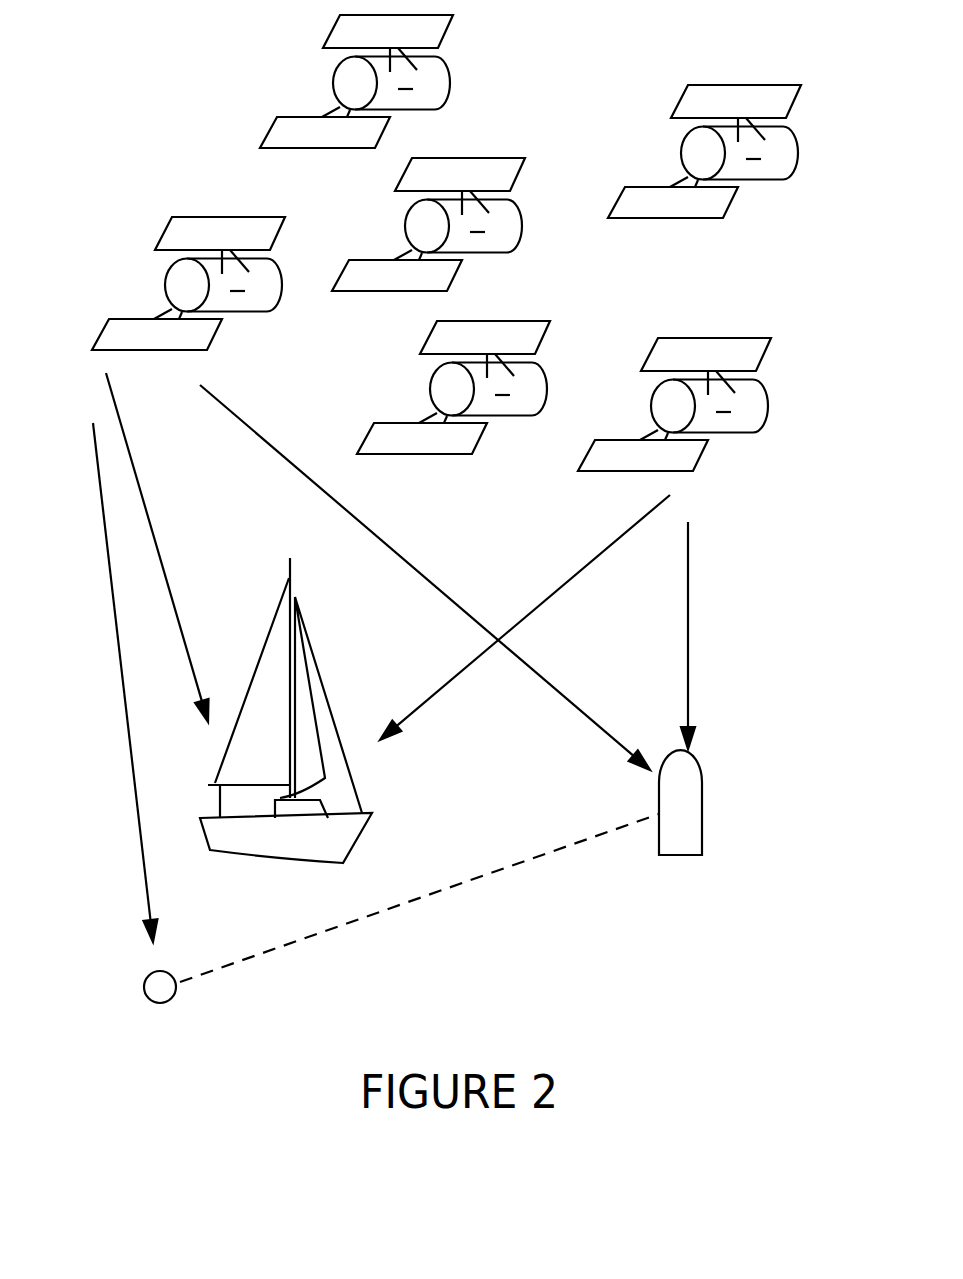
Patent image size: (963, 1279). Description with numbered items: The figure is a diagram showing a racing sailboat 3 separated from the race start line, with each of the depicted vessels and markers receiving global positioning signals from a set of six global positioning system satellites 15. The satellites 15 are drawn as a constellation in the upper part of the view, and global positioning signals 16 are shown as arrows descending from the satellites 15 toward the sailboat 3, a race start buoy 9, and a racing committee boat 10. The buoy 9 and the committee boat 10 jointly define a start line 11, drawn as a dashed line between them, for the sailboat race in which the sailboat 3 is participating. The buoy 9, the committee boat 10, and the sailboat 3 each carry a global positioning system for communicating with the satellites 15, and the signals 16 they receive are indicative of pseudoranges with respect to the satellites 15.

The global positioning system satellites 15 is at (587, 274).
The global positioning signals 16 is at (253, 433).
The racing sailboat 3 is at (265, 858).
The racing committee boat 10 is at (702, 822).
The start line 11 is at (472, 878).
The race start buoy 9 is at (162, 1003).